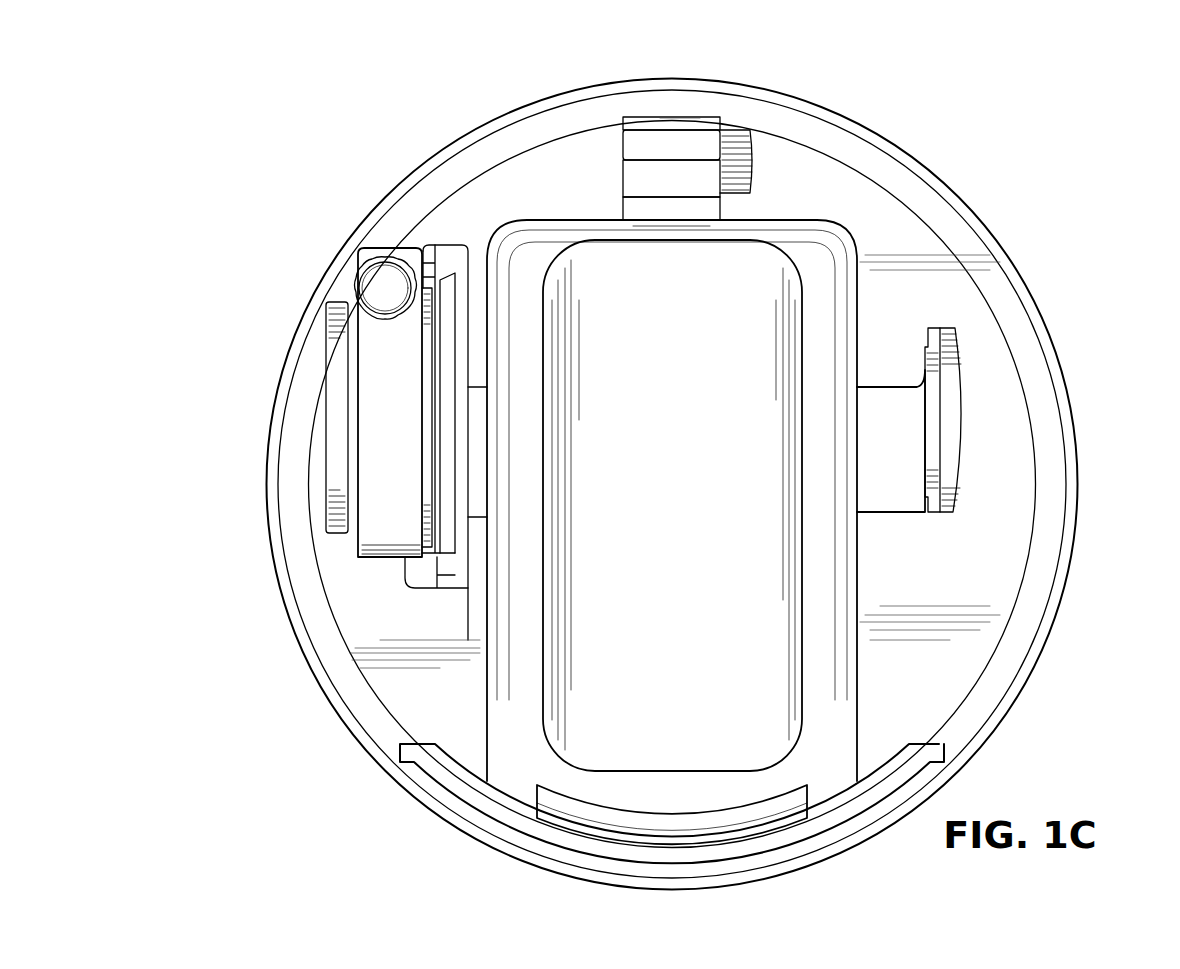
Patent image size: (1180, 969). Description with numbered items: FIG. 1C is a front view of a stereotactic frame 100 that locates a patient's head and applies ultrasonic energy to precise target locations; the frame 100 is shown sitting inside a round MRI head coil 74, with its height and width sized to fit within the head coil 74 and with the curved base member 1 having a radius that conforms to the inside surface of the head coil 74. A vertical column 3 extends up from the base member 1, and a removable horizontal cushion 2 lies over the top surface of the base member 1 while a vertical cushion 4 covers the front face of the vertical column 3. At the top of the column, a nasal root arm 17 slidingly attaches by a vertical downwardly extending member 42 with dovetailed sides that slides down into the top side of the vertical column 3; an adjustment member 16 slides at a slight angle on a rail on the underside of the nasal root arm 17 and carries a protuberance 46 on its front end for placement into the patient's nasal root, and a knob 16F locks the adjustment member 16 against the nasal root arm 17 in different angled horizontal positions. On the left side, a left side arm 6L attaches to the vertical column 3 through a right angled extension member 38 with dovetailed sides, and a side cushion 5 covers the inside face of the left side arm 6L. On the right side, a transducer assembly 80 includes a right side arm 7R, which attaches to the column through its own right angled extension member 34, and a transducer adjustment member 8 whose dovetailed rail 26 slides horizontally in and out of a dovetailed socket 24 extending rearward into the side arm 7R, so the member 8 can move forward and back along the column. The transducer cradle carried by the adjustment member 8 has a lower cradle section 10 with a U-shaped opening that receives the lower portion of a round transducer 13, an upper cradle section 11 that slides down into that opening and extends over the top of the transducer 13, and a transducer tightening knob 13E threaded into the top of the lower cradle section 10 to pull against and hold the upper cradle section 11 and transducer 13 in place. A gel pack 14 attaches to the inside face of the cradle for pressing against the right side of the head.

The stereotactic frame 100 is at (918, 130).
The MRI head coil 74 is at (1077, 386).
The base member 1 is at (458, 762).
The horizontal cushion 2 is at (538, 788).
The vertical column 3 is at (860, 576).
The vertical cushion 4 is at (662, 505).
The nasal root arm 17 is at (672, 117).
The adjustment member 16 is at (623, 170).
The vertical downwardly extending member 42 is at (623, 208).
The protuberance 46 is at (672, 163).
The knob 16F is at (758, 172).
The round transducer 13 is at (326, 444).
The upper cradle section 11 is at (378, 343).
The transducer tightening knob 13E is at (352, 285).
The lower cradle section 10 is at (384, 560).
The gel pack 14 is at (434, 426).
The transducer adjustment member 8 is at (446, 466).
The right angled extension member 34 is at (480, 386).
The dovetailed rail 26 is at (453, 546).
The dovetailed socket 24 is at (445, 580).
The right side arm 7R is at (466, 582).
The transducer assembly 80 is at (336, 554).
The right angled extension member 38 is at (888, 386).
The left side arm 6L is at (960, 486).
The side cushion 5 is at (914, 488).